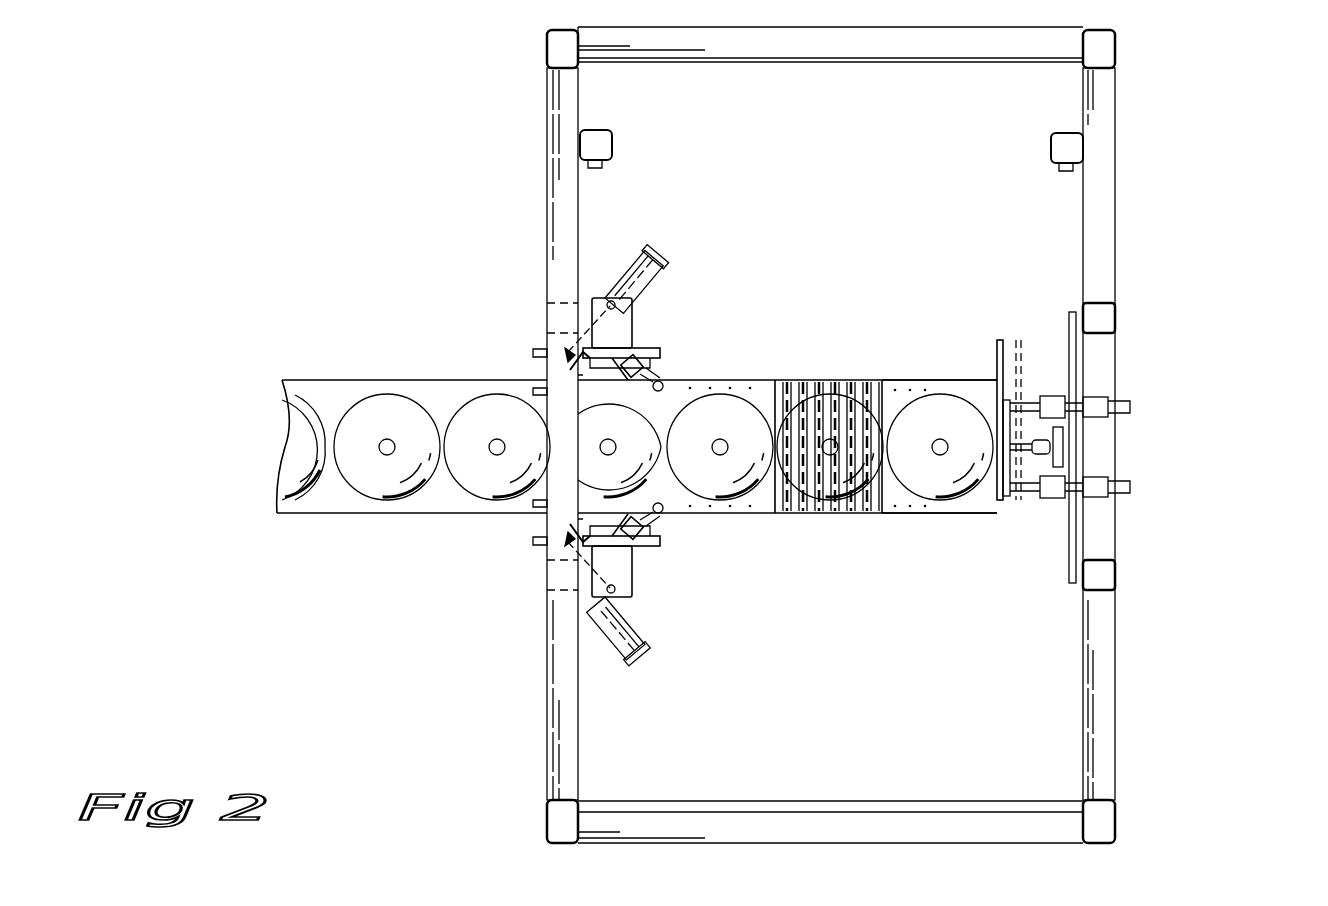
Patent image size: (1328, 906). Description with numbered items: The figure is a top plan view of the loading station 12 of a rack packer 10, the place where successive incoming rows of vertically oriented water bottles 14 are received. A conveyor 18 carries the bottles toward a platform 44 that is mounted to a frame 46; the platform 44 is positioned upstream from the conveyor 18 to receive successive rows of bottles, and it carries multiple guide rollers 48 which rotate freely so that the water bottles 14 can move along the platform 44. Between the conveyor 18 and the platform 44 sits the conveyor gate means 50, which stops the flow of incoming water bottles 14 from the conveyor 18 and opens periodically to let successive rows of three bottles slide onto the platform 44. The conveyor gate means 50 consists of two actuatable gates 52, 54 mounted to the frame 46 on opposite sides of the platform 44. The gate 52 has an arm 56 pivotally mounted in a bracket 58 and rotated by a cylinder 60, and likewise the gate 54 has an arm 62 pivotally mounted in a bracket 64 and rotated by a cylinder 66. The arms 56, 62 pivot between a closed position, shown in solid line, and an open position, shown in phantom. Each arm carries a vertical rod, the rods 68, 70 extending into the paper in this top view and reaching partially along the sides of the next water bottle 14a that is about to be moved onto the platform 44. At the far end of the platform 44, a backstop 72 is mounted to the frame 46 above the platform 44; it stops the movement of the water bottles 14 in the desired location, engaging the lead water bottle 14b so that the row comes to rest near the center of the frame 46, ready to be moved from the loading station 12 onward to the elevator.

The rack packer 10 is at (1186, 282).
The loading station 12 is at (827, 522).
The water bottles 14 is at (480, 407).
The next water bottle 14a is at (619, 450).
The lead water bottle 14b is at (940, 447).
The conveyor 18 is at (440, 508).
The platform 44 is at (905, 515).
The frame 46 is at (1116, 235).
The guide rollers 48 is at (795, 383).
The conveyor gate means 50 is at (728, 216).
The gate 52 is at (636, 312).
The gate 54 is at (636, 580).
The arm 56 is at (668, 376).
The bracket 58 is at (655, 352).
The cylinder 60 is at (632, 252).
The arm 62 is at (667, 514).
The bracket 64 is at (650, 546).
The cylinder 66 is at (648, 636).
The vertical rod 68 is at (667, 389).
The vertical rod 70 is at (720, 447).
The backstop 72 is at (1020, 528).